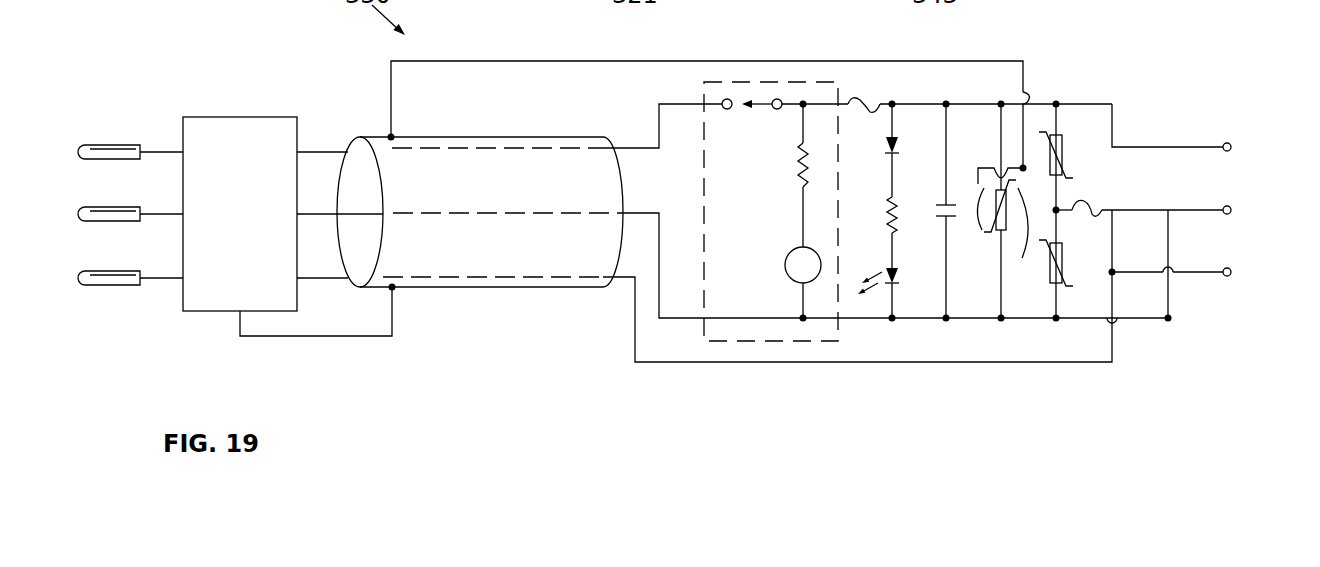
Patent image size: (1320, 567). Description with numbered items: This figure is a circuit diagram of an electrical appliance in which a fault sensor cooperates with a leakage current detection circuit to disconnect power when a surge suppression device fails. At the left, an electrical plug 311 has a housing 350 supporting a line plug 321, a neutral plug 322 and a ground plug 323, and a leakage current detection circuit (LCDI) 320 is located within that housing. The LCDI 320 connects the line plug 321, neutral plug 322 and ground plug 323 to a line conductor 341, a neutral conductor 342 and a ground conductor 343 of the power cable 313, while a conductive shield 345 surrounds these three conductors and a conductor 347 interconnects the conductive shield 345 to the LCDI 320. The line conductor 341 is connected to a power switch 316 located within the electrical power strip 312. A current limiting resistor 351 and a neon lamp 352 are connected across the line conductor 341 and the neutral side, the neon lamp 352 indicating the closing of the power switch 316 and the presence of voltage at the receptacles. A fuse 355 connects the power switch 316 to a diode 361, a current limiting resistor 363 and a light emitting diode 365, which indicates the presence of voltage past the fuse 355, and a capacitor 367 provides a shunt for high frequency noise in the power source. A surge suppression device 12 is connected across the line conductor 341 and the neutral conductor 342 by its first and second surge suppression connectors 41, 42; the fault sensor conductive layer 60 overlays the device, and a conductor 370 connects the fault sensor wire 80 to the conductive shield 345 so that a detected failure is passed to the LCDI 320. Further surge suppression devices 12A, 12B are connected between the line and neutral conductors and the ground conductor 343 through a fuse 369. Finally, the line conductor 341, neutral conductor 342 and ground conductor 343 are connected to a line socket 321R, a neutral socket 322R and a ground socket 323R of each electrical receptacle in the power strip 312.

The electrical plug 311 is at (123, 74).
The electrical power strip 312 is at (1127, 70).
The power cable 313 is at (548, 136).
The power switch 316 is at (764, 102).
The leakage current detection circuit (LCDI) 320 is at (253, 116).
The line plug 321 is at (132, 146).
The neutral plug 322 is at (130, 208).
The ground plug 323 is at (132, 287).
The line socket 321R is at (1225, 142).
The neutral socket 322R is at (1225, 205).
The ground socket 323R is at (1227, 283).
The line conductor 341 is at (489, 148).
The neutral conductor 342 is at (425, 213).
The ground conductor 343 is at (543, 277).
The conductive shield 345 is at (418, 135).
The conductor 347 is at (320, 338).
The housing 350 is at (215, 312).
The current limiting resistor 351 is at (797, 166).
The neon lamp 352 is at (786, 258).
The fuse 355 is at (870, 97).
The diode 361 is at (896, 143).
The current limiting resistor 363 is at (892, 202).
The light emitting diode (LED) 365 is at (896, 272).
The capacitor 367 is at (942, 204).
The fuse 369 is at (1078, 206).
The conductor 370 is at (685, 58).
The fault sensor wire 80 is at (1025, 82).
The first surge suppression connector 41 is at (1001, 144).
The second surge suppression connector 42 is at (1000, 290).
The surge suppression device 12 is at (996, 233).
The fault sensor conductive layer 60 is at (1006, 230).
The varistor 12A is at (1060, 137).
The surge suppression device 12B is at (1074, 264).